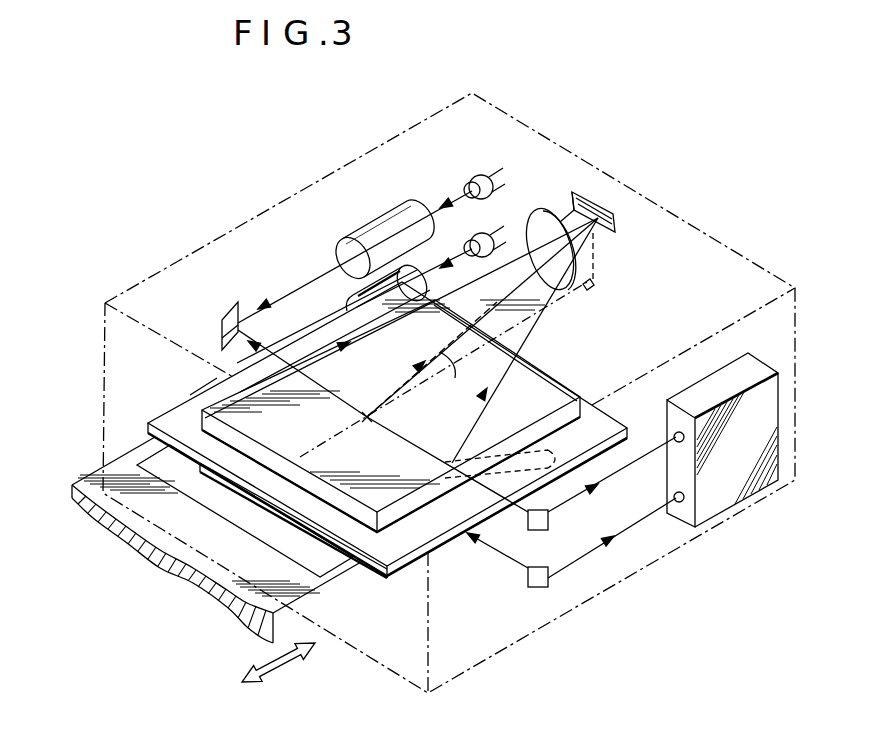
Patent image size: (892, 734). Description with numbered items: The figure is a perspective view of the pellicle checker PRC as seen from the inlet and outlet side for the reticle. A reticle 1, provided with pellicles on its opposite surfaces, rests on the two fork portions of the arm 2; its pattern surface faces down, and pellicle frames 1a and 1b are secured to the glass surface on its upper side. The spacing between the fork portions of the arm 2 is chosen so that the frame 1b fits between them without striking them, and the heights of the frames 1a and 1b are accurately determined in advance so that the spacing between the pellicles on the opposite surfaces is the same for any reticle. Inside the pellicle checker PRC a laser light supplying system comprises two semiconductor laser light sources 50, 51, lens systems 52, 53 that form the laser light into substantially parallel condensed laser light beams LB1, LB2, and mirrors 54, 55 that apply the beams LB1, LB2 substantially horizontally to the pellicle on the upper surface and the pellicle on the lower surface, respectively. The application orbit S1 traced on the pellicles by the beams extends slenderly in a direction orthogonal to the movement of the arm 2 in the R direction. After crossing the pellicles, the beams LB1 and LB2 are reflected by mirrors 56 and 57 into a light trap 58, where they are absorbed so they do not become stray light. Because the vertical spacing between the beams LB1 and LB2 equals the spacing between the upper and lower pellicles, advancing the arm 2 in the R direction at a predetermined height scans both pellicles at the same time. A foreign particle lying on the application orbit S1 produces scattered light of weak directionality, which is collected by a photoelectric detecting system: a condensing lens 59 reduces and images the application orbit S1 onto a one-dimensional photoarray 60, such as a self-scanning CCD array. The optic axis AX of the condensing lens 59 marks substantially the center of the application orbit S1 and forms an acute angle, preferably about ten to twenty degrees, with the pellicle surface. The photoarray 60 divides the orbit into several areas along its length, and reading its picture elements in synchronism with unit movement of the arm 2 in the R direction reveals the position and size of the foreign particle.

The pellicle checker PRC is at (521, 122).
The reticle 1 is at (177, 422).
The pellicle frame 1a is at (237, 363).
The pellicle frame 1b is at (253, 503).
The arm 2 is at (97, 482).
The application orbit S1 is at (367, 412).
The optic axis AX is at (448, 353).
The R direction R is at (284, 662).
The semiconductor laser light source 50 is at (467, 180).
The semiconductor laser light source 51 is at (478, 236).
The lens system 52 is at (375, 225).
The lens system 53 is at (425, 270).
The mirror 54 is at (232, 303).
The mirror 55 is at (217, 368).
The laser light beam LB1 is at (263, 347).
The laser light beam LB2 is at (470, 548).
The mirror 56 is at (548, 520).
The mirror 57 is at (548, 578).
The light trap 58 is at (727, 500).
The condensing lens 59 is at (540, 210).
The one-dimensional photoarray 60 is at (613, 218).